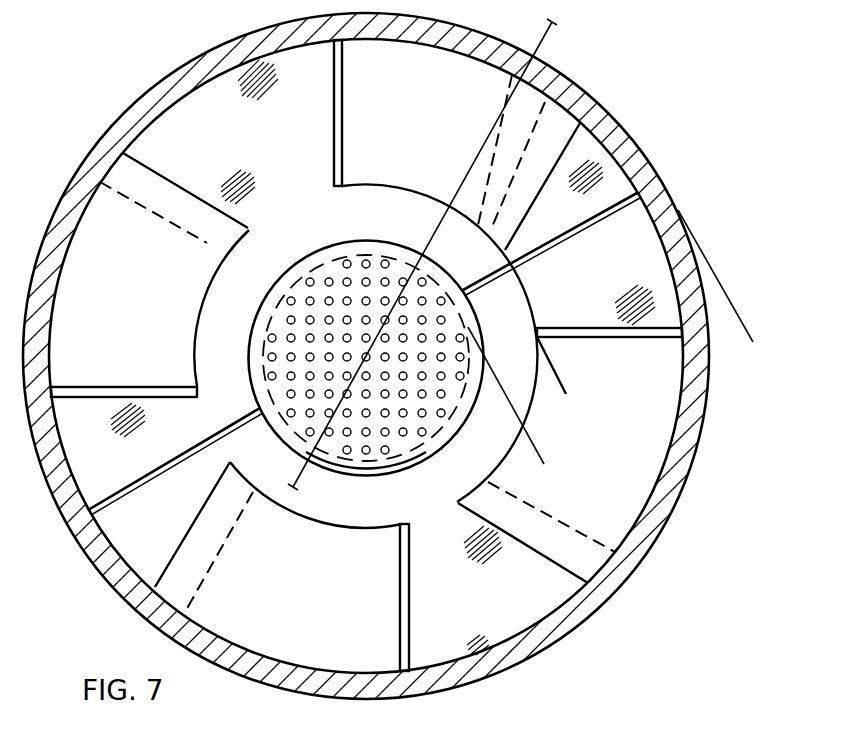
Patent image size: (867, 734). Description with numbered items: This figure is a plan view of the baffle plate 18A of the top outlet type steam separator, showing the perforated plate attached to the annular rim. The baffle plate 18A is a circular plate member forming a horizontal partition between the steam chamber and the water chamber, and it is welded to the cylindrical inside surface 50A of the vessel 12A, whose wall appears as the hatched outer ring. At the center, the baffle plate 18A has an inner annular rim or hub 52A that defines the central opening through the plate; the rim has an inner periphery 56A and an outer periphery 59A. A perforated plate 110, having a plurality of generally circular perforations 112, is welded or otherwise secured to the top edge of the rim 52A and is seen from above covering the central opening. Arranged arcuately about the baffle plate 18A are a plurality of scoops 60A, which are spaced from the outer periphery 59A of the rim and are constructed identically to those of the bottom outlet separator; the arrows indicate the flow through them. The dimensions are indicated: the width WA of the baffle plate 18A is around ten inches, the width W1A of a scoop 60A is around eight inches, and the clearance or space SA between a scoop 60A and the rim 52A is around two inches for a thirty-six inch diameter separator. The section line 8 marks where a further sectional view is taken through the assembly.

The vessel 12A is at (213, 57).
The cylindrical inside surface 50A is at (148, 128).
The baffle plate 18A is at (588, 302).
The outer periphery of rim 59A is at (253, 407).
The inner annular rim 52A is at (393, 244).
The perforated plate 110 is at (392, 479).
The inner periphery of rim 56A is at (310, 270).
The perforations 112 is at (441, 338).
The scoops 60A is at (390, 132).
The section line 8- 8 is at (538, 23).
The clearance or space SA is at (529, 411).
The width of scoop W1A is at (727, 300).
The width of baffle plate WA is at (750, 342).